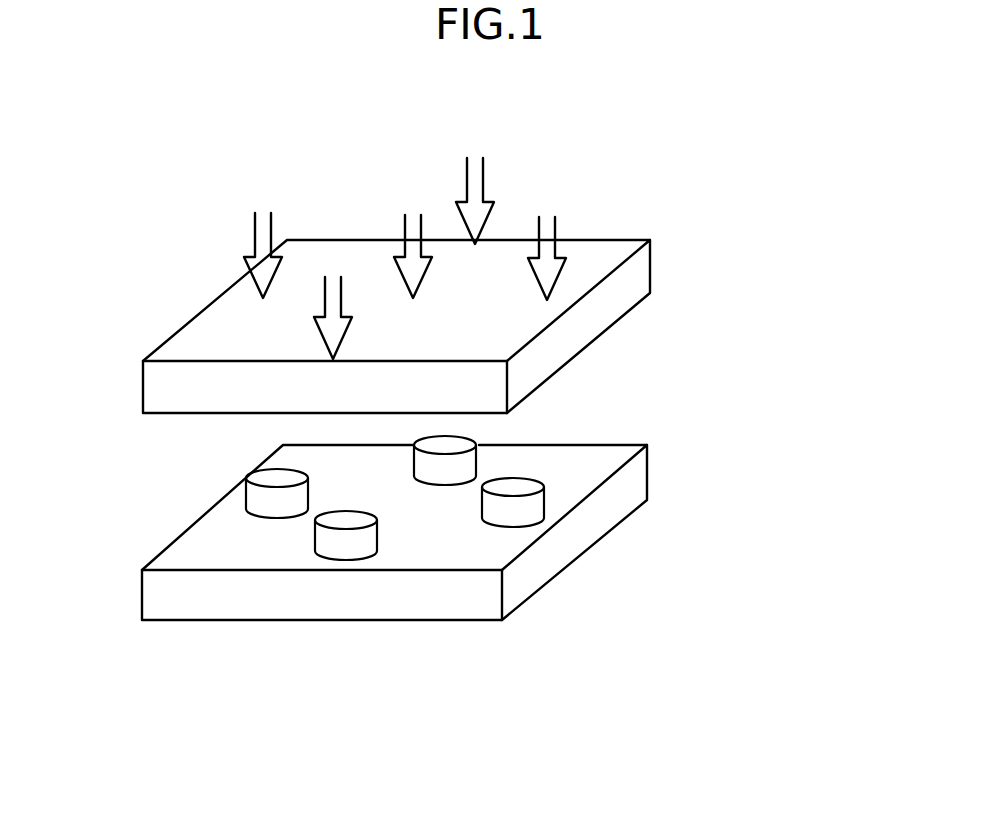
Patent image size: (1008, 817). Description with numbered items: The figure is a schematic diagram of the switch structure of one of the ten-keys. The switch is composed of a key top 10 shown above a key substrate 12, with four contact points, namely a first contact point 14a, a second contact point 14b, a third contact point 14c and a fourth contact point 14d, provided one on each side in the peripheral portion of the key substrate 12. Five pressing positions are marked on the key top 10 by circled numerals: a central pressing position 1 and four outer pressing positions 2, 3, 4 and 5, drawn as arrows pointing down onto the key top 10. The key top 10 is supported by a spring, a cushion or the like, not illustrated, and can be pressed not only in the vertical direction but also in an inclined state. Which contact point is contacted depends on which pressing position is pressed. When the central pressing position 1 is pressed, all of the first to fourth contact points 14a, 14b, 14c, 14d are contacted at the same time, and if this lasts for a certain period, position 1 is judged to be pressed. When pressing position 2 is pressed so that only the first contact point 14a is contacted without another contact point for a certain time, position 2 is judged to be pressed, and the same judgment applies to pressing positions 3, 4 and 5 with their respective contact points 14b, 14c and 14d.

The pressing position 1 is at (413, 241).
The pressing position 2 is at (475, 186).
The pressing position 3 is at (547, 243).
The pressing position 4 is at (333, 303).
The pressing position 5 is at (263, 240).
The key top 10 is at (615, 309).
The key substrate 12 is at (547, 567).
The first contact point 14a is at (478, 444).
The second contact point 14b is at (538, 482).
The third contact point 14c is at (343, 523).
The fourth contact point 14d is at (252, 479).